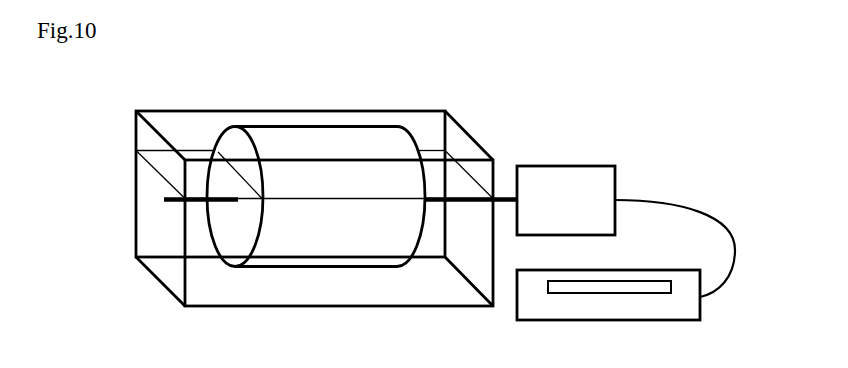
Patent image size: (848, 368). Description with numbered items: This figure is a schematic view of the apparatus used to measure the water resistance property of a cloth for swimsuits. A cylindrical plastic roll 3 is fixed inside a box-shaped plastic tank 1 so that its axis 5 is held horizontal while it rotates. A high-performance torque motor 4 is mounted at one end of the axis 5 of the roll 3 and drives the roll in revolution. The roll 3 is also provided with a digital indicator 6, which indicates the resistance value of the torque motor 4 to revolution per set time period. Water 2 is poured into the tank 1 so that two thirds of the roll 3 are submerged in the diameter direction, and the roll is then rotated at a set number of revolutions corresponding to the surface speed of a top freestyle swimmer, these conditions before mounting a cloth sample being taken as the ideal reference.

The tank 1 is at (136, 144).
The water 2 is at (162, 228).
The roll 3 is at (318, 126).
The torque motor 4 is at (568, 163).
The axis 5 is at (457, 198).
The digital indicator 6 is at (700, 303).